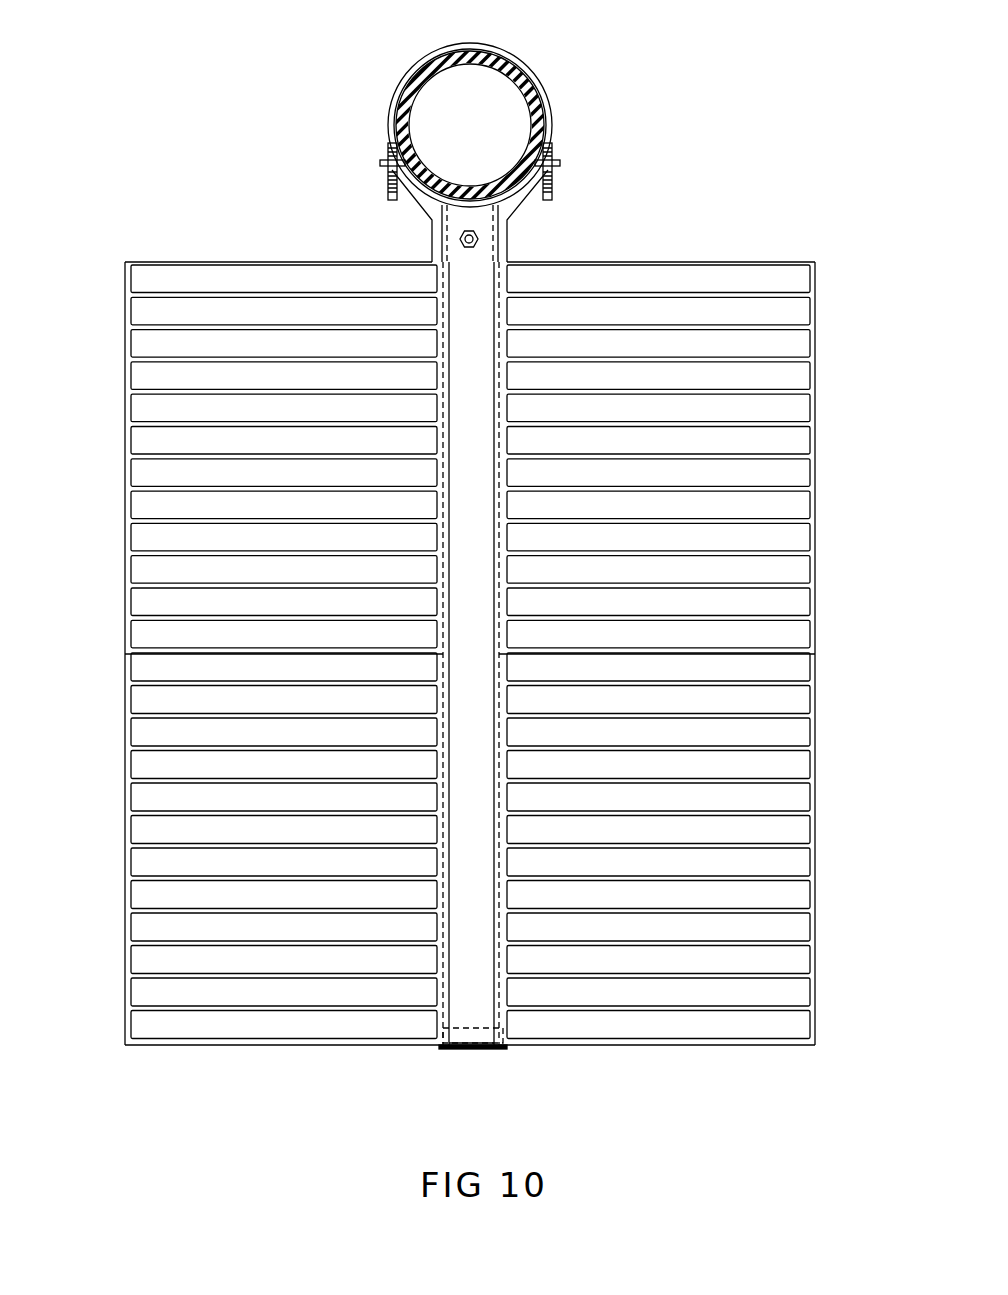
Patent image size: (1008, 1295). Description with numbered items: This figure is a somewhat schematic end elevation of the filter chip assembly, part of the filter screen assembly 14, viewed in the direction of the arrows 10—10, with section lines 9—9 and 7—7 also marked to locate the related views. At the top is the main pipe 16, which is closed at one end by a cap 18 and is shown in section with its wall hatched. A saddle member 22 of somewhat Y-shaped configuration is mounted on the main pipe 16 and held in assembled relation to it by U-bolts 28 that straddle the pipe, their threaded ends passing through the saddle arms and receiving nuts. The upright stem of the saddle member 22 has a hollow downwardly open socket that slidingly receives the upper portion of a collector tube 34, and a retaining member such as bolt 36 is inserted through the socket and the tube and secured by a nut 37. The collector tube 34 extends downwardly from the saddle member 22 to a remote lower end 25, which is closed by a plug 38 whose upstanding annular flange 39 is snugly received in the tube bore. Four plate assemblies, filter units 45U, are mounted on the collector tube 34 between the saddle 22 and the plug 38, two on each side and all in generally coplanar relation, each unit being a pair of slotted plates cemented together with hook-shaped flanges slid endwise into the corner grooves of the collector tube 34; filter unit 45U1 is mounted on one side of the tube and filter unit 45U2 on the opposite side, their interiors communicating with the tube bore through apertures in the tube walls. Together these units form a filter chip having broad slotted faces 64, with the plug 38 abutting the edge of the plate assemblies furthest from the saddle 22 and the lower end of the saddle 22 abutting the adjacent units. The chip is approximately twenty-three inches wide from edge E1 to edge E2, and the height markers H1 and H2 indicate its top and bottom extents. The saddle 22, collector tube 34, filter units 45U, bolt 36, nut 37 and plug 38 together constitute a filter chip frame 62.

The section line 9— 9 is at (103, 75).
The section line 10— 10 is at (117, 472).
The section line 7— 7 is at (117, 720).
The cap 18 is at (470, 78).
The main pipe 16 is at (512, 80).
The U-bolts 28 is at (550, 110).
The saddle member 22 is at (512, 212).
The bolt 36 is at (474, 245).
The nut 37 is at (460, 239).
The filter chip frame 62 is at (619, 206).
The filter screen assembly 14 is at (829, 559).
The collector tube 34 is at (488, 725).
The filter unit 45U2 is at (228, 267).
The filter unit 45U1 is at (690, 267).
The filter unit 45U is at (127, 631).
The slotted faces 64 is at (238, 1003).
The top height reference H1 is at (257, 261).
The bottom height reference H2 is at (290, 1047).
The edge E1 is at (124, 284).
The edge E2 is at (817, 284).
The annular flange 39 is at (492, 1026).
The plug 38 is at (488, 1050).
The lower end 25 is at (473, 1050).